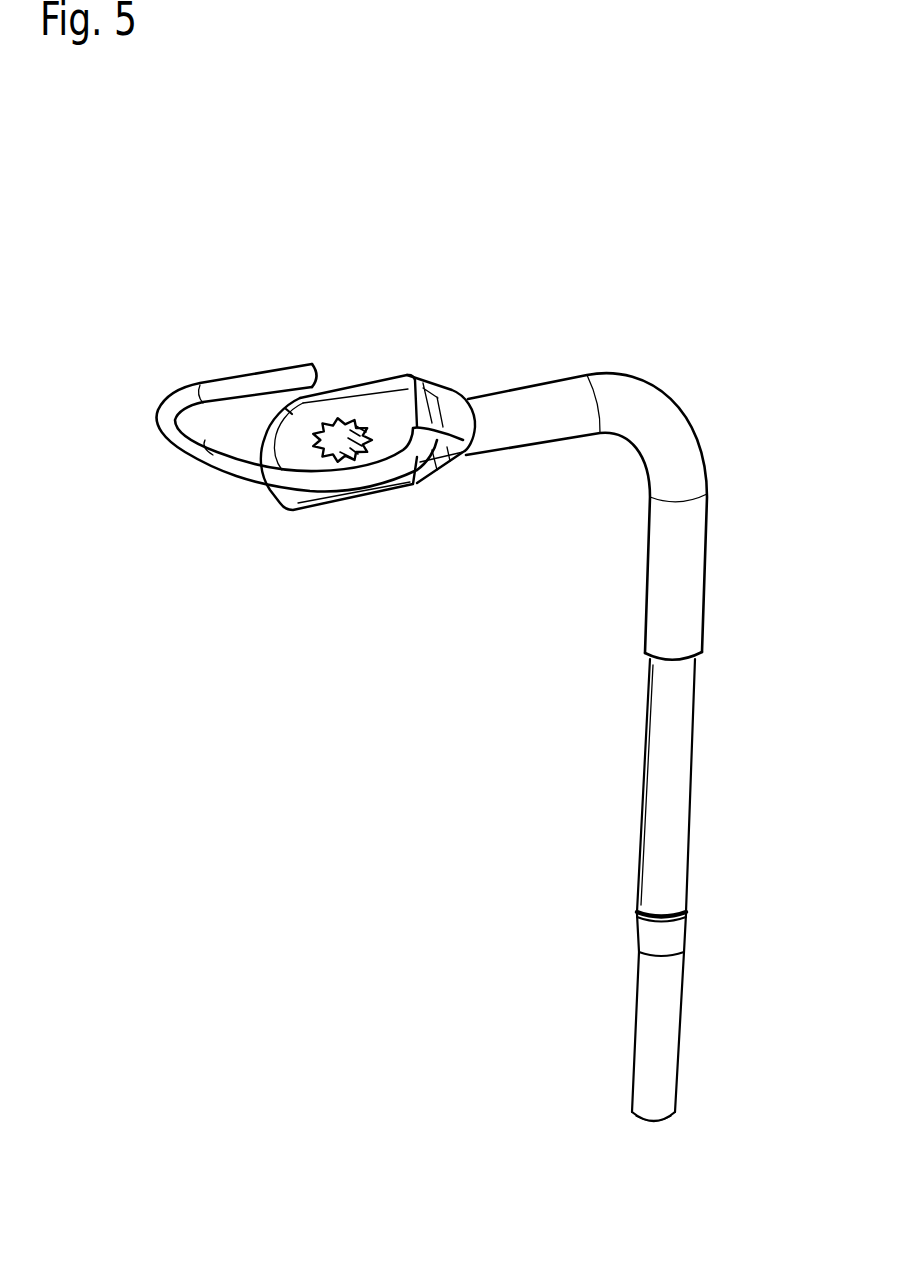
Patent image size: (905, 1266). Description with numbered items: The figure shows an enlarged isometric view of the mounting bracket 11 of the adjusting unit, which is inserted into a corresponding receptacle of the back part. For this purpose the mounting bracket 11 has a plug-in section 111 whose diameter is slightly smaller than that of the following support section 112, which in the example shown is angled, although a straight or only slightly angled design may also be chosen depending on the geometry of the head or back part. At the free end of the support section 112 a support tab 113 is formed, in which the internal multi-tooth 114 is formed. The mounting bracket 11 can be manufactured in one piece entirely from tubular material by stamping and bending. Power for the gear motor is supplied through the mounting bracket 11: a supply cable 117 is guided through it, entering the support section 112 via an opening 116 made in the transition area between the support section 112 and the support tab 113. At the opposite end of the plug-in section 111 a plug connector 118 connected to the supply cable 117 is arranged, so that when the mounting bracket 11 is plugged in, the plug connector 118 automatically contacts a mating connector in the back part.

The mounting bracket 11 is at (692, 375).
The plug-in section 111 is at (662, 703).
The support section 112 is at (678, 452).
The support tab 113 is at (292, 510).
The internal multi-tooth 114 is at (333, 432).
The opening 116 is at (443, 443).
The supply cable 117 is at (223, 453).
The plug connector 118 is at (658, 1002).